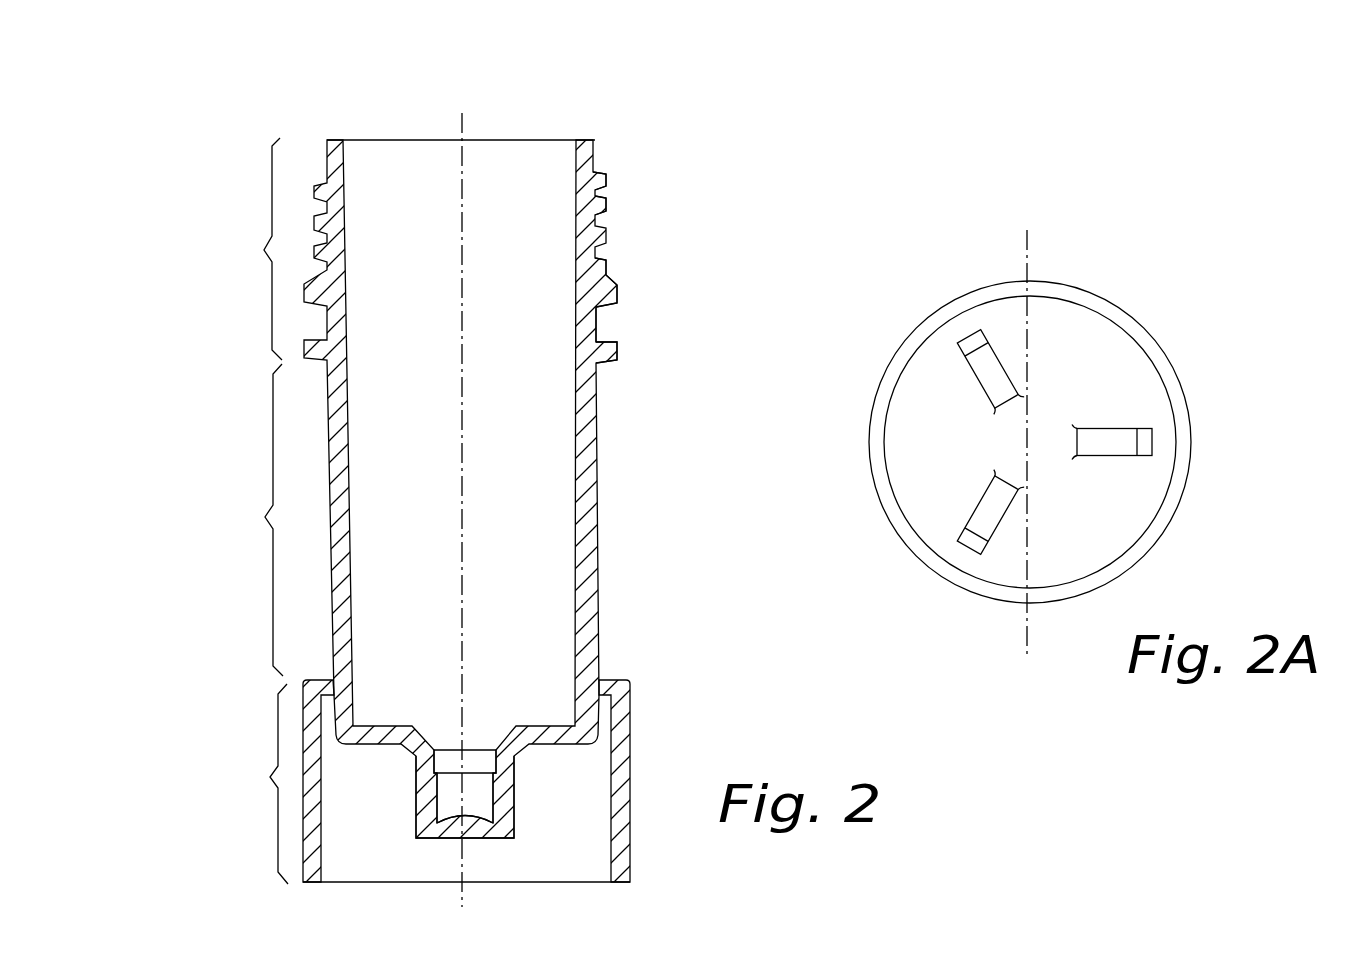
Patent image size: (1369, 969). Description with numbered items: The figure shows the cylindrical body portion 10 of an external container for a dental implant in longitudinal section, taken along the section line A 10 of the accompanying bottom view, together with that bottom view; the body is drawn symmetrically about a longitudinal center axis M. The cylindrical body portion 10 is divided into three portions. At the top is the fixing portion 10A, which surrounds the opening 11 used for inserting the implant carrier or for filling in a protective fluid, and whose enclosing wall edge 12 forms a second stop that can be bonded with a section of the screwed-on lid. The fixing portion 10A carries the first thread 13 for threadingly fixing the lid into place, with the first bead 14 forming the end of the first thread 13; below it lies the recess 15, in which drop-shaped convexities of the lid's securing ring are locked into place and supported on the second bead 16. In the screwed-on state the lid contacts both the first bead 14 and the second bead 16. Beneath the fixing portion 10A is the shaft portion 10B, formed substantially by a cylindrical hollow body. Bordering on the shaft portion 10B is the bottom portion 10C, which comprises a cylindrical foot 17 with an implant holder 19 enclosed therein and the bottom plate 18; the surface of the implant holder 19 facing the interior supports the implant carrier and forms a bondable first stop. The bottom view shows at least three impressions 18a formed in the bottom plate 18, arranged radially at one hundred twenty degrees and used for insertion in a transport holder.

In FIG. 2, the cylindrical body portion 10 is at (374, 136).
In FIG. 2, the fixing portion 10A is at (247, 249).
In FIG. 2, the shaft portion 10B is at (247, 520).
In FIG. 2, the bottom portion 10C is at (250, 784).
In FIG. 2, the longitudinal center axis M is at (466, 118).
In FIG. 2, the opening 11 is at (540, 139).
In FIG. 2, the enclosing wall edge 12 is at (586, 139).
In FIG. 2, the first thread 13 is at (607, 179).
In FIG. 2, the first bead 14 is at (618, 292).
In FIG. 2, the recess 15 is at (606, 322).
In FIG. 2, the second bead 16 is at (620, 353).
In FIG. 2, the cylindrical foot 17 is at (626, 722).
In FIG. 2A, the cylindrical foot 17 is at (1107, 308).
In FIG. 2, the bottom plate 18 is at (532, 882).
In FIG. 2A, the bottom plate 18 is at (1140, 393).
In FIG. 2A, the impressions 18a is at (960, 337).
In FIG. 2, the implant holder 19 is at (438, 838).
In FIG. 2A, the section line A- A is at (1023, 245).